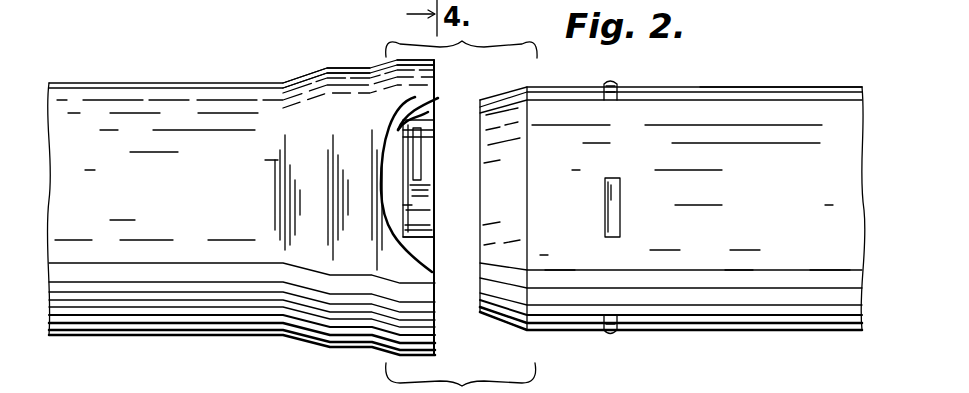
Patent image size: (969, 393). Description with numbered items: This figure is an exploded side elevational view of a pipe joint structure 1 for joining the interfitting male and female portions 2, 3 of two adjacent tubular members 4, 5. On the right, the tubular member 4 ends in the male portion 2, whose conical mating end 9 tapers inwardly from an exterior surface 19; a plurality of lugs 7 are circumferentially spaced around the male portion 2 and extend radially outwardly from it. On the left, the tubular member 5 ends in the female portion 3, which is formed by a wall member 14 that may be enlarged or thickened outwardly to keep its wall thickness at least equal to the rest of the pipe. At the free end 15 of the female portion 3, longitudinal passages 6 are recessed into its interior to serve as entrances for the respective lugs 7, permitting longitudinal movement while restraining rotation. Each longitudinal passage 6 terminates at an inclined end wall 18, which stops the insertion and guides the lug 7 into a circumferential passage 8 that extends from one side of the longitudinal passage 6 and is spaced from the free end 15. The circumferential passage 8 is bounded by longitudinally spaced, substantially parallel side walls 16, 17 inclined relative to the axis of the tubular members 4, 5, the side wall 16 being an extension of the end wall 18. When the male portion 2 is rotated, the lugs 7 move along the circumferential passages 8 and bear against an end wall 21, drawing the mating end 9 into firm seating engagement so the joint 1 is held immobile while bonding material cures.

The joint structure 1 is at (514, 33).
The male portion 2 is at (538, 80).
The female portion 3 is at (376, 62).
The tubular member 4 is at (798, 96).
The tubular member 5 is at (147, 83).
The longitudinal passage 6 is at (426, 195).
The lug 7 is at (617, 86).
The circumferential passage 8 is at (412, 132).
The mating end 9 is at (495, 320).
The wall member 14 is at (353, 68).
The free end 15 is at (436, 84).
The side wall 16 is at (428, 112).
The side wall 17 is at (416, 158).
The end wall 18 is at (415, 205).
The exterior surface 19 is at (541, 331).
The end wall 21 is at (407, 179).